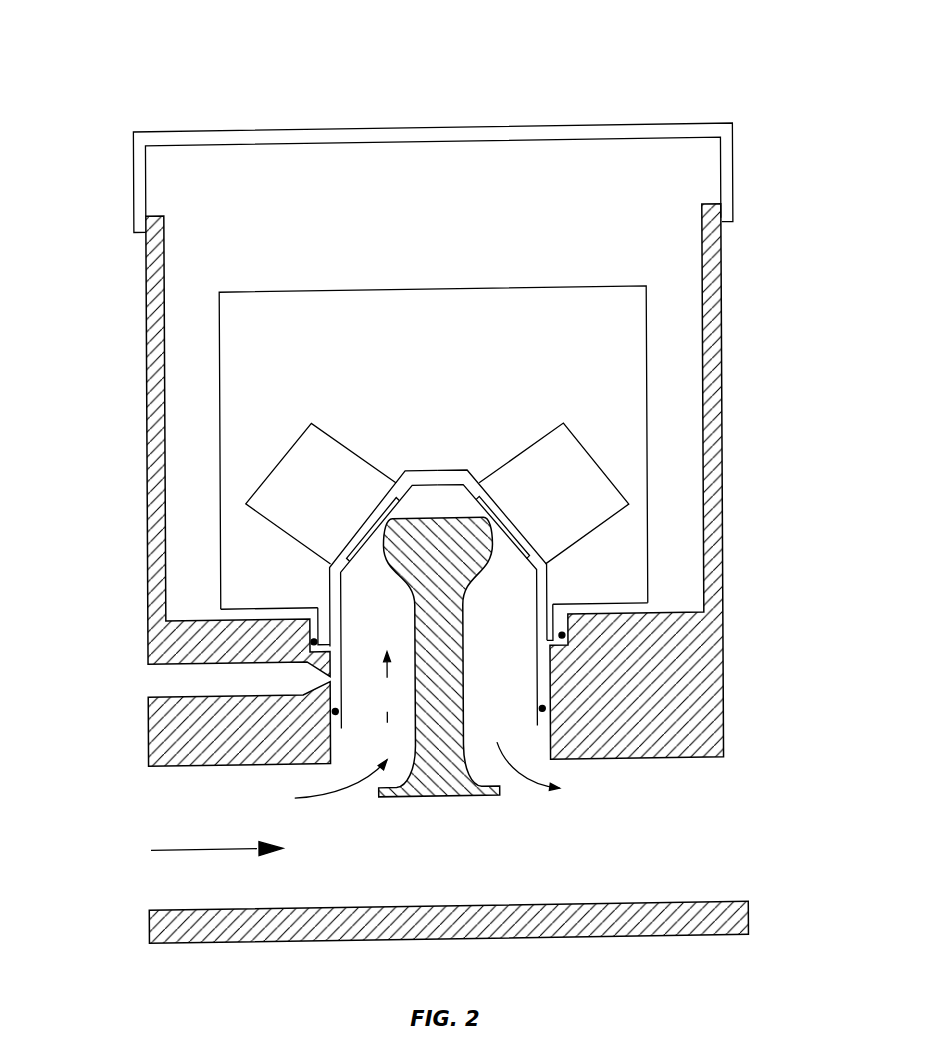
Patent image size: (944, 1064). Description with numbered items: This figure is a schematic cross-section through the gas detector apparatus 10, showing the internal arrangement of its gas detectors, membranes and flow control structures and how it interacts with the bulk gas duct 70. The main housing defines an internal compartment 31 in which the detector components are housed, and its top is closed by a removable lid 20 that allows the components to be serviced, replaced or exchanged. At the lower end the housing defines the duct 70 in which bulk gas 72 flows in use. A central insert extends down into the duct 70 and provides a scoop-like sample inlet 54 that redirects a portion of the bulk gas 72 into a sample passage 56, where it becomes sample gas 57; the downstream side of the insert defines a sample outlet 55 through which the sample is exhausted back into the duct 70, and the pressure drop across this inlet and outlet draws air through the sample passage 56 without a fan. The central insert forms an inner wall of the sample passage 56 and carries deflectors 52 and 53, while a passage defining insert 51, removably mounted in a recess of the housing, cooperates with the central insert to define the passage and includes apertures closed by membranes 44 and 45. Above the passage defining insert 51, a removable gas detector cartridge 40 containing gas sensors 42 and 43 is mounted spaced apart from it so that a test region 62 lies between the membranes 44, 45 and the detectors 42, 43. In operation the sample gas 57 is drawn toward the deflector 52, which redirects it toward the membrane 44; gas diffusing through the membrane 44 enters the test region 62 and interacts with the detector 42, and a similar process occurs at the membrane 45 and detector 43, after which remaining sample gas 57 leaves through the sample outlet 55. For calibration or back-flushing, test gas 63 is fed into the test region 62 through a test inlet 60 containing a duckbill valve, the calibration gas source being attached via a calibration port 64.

The gas detector apparatus 10 is at (115, 383).
The lid 20 is at (290, 126).
The internal compartment 31 is at (684, 286).
The gas detector cartridge 40 is at (274, 288).
The gas sensor 42 is at (306, 499).
The gas sensor 43 is at (541, 496).
The membrane 44 is at (346, 544).
The membrane 45 is at (526, 546).
The passage defining insert 51 is at (539, 689).
The deflector 52 is at (341, 582).
The deflector 53 is at (564, 636).
The sample inlet 54 is at (341, 779).
The sample outlet 55 is at (528, 766).
The sample passage 56 is at (363, 623).
The sample gas 57 is at (373, 705).
The test inlet 60 is at (225, 685).
The test region 62 is at (345, 560).
The test gas 63 is at (770, 523).
The calibration port 64 is at (142, 677).
The bulk gas duct 70 is at (586, 854).
The bulk gas 72 is at (217, 846).